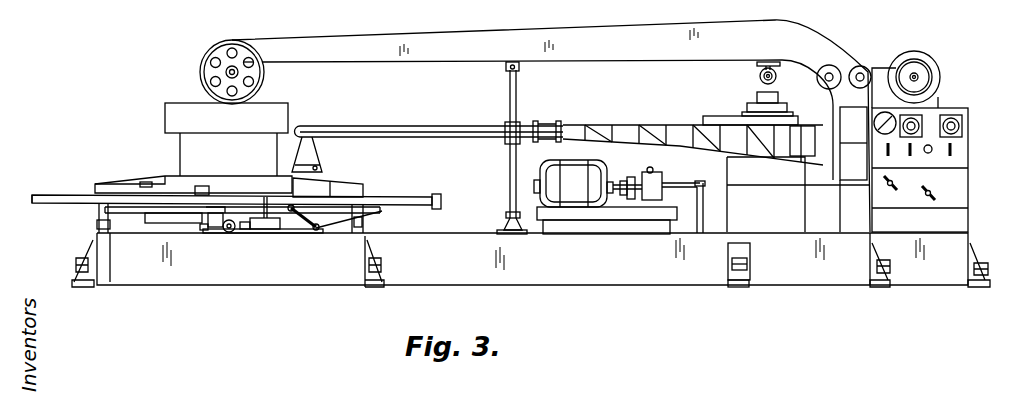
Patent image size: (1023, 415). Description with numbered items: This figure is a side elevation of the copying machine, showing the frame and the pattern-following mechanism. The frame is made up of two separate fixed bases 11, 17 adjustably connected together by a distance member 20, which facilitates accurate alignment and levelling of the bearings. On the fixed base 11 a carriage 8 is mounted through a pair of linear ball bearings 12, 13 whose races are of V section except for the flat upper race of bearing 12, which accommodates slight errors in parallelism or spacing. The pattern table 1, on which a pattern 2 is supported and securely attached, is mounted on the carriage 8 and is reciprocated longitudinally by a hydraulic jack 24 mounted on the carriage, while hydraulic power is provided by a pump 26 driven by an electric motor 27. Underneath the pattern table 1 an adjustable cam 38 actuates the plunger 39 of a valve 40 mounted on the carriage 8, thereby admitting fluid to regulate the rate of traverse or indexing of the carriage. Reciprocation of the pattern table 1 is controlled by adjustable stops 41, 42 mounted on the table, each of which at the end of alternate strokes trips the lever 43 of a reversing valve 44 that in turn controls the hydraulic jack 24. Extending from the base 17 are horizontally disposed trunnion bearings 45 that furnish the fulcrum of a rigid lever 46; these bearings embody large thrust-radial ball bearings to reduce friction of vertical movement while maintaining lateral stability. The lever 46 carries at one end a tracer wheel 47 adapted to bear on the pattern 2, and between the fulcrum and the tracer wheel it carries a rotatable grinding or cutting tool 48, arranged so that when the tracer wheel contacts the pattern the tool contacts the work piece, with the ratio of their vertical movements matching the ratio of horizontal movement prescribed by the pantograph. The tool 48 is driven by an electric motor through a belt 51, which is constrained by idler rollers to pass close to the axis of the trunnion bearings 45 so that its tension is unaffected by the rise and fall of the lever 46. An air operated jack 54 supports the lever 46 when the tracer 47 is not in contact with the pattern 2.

The pattern table 1 is at (168, 174).
The pattern 2 is at (290, 112).
The carriage 8 is at (46, 208).
The fixed base 11 is at (250, 272).
The linear ball bearing 12 is at (96, 228).
The linear ball bearing 13 is at (366, 226).
The fixed base 17 is at (778, 270).
The distance member 20 is at (593, 273).
The hydraulic jack 24 is at (437, 196).
The pump 26 is at (657, 186).
The electric motor 27 is at (578, 171).
The adjustable cam 38 is at (150, 196).
The plunger 39 is at (217, 206).
The valve 40 is at (214, 232).
The adjustable stop 41 is at (201, 186).
The adjustable stop 42 is at (336, 190).
The lever 43 is at (263, 231).
The reversing valve 44 is at (292, 233).
The trunnion bearings 45 is at (829, 64).
The lever 46 is at (632, 42).
The tracer wheel 47 is at (258, 74).
The grinding or cutting tool 48 is at (760, 78).
The belt 51 is at (881, 68).
The air operated jack 54 is at (509, 165).